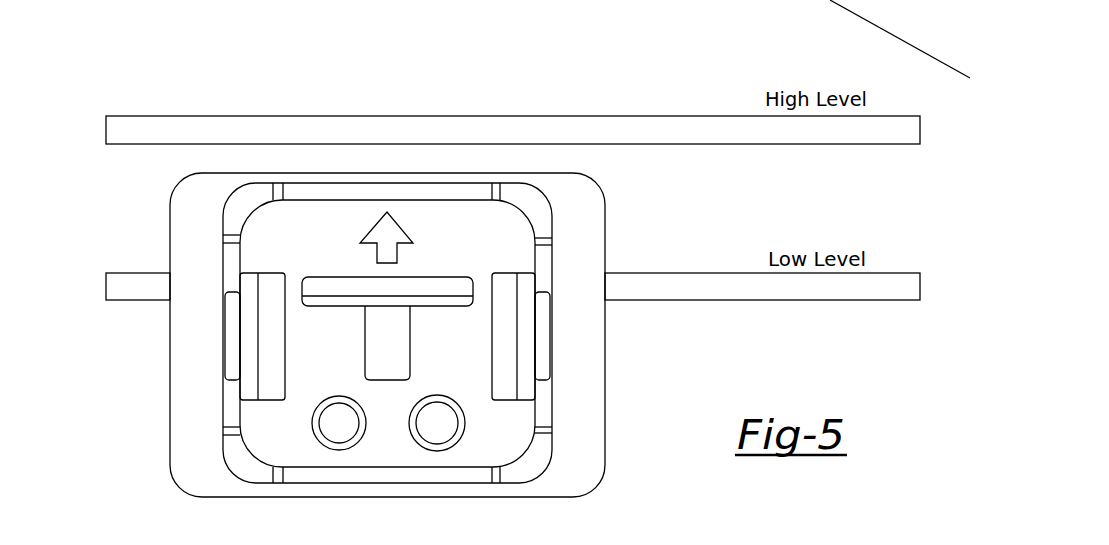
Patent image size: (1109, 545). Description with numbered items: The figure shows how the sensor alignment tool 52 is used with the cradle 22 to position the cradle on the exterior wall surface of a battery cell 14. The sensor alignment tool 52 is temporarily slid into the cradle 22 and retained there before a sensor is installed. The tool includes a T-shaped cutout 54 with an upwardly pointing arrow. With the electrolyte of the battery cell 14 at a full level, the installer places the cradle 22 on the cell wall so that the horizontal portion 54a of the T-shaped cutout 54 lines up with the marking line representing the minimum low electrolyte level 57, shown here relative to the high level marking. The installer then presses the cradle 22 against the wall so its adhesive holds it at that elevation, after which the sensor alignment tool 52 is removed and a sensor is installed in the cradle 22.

The battery cell 14 is at (845, 193).
The cradle 22 is at (170, 193).
The sensor alignment tool 52 is at (503, 438).
The T-shaped cutout 54 is at (410, 343).
The horizontal portion of the T-shaped cutout 54a is at (438, 277).
The minimum low electrolyte level 57 is at (875, 300).